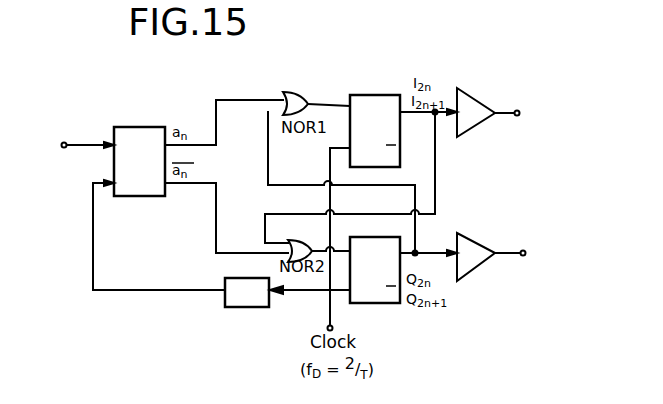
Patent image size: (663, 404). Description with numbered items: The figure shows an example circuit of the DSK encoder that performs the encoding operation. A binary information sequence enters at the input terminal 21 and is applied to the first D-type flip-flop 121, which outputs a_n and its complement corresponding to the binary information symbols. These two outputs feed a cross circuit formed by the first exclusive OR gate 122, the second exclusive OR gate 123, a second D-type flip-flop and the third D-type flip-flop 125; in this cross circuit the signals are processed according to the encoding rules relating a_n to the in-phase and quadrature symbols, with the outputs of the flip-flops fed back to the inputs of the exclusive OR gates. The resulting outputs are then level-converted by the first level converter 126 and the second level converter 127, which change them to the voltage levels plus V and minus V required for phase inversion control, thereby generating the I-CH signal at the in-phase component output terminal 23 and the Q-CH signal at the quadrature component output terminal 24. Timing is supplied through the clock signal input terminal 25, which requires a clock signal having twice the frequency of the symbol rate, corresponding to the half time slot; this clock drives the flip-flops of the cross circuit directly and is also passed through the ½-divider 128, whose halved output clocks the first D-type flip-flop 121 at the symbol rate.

The input terminal 21 is at (63, 150).
The first D-type flip-flop 121 is at (138, 127).
The first exclusive OR gate 122 is at (286, 92).
The quadrature component output terminal 24 is at (376, 95).
The second exclusive OR gate 123 is at (310, 240).
The third D-type flip-flop 125 is at (388, 237).
The first level converter 126 is at (474, 88).
The second level converter 127 is at (487, 245).
The in-phase component output terminal 23 is at (517, 110).
The ½-divider 128 is at (224, 280).
The clock signal input terminal 25 is at (333, 328).